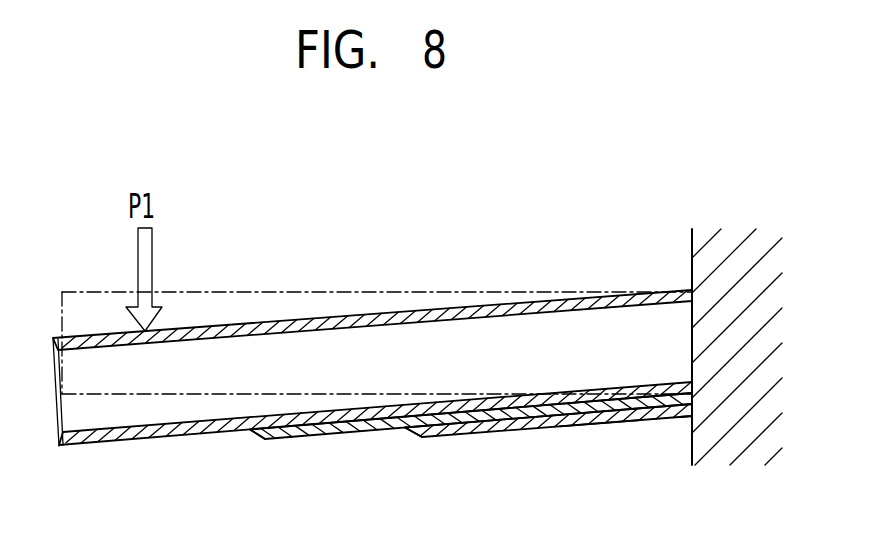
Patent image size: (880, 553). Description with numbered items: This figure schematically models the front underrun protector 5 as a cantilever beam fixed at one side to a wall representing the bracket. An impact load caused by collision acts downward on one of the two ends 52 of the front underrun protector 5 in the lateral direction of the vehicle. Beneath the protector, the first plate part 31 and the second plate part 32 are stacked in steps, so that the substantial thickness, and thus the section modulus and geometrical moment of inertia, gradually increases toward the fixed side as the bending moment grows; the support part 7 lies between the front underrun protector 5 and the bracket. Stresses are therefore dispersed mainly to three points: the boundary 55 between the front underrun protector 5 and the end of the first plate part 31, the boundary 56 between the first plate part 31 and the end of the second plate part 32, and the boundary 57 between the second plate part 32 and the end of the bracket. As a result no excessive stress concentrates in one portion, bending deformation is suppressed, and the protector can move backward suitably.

The front underrun protector 5 is at (355, 316).
The end of the front underrun protector 52 is at (133, 412).
The boundary between front underrun protector and first plate part 55 is at (253, 431).
The first plate part 31 is at (322, 434).
The boundary between first plate part and second plate part 56 is at (407, 432).
The second plate part 32 is at (527, 430).
The support part 7 is at (592, 424).
The boundary between second plate part and bracket 57 is at (688, 418).